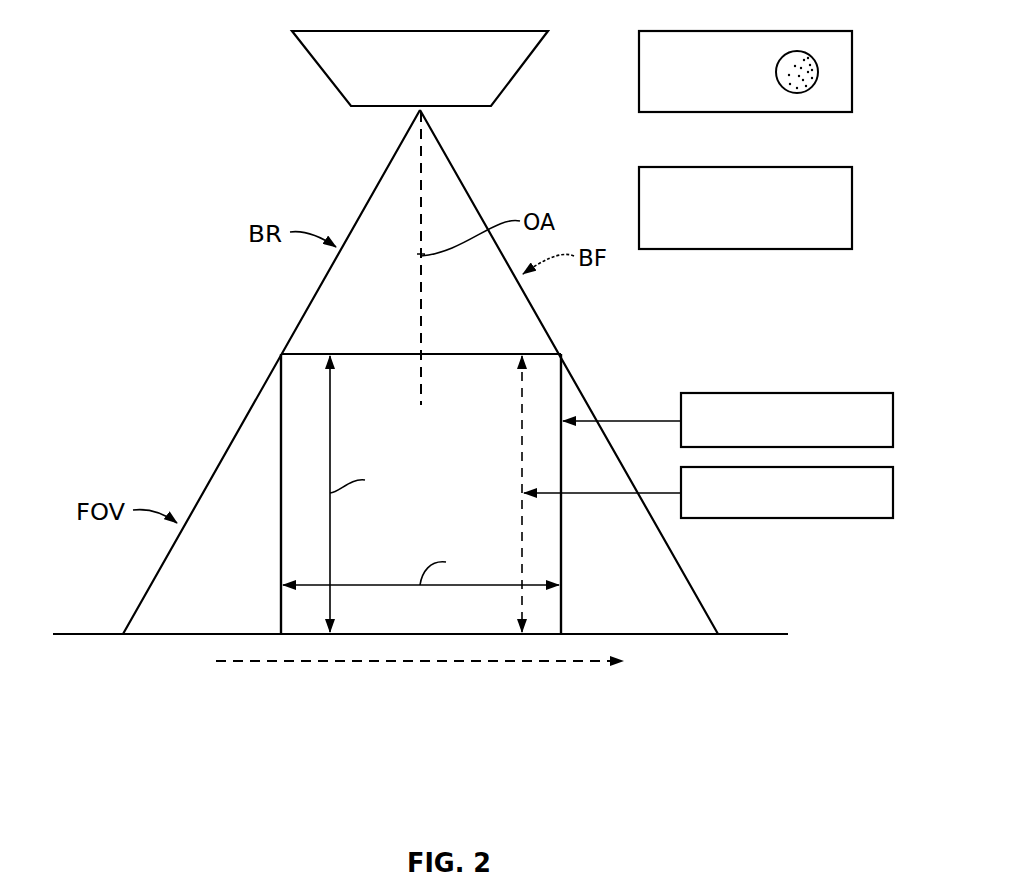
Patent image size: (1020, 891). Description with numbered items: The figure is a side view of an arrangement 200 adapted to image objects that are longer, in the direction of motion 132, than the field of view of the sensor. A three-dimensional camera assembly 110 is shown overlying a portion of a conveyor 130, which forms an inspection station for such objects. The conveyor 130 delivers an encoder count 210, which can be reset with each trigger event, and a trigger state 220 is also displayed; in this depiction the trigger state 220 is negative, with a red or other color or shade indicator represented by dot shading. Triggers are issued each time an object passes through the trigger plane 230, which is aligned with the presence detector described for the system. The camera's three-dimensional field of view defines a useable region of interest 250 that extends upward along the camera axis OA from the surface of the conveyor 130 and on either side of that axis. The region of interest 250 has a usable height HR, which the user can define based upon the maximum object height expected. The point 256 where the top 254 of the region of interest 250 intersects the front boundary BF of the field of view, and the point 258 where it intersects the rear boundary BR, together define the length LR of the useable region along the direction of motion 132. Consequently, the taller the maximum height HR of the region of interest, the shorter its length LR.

The camera assembly 110 is at (475, 37).
The trigger state 220 is at (783, 30).
The encoder count 210 is at (783, 167).
The top of the ROI 254 is at (313, 354).
The intersection point with rear FOV boundary 258 is at (278, 354).
The intersection point with front FOV boundary 256 is at (562, 354).
The useable region of interest 250 is at (524, 343).
The trigger plane 230 is at (526, 533).
The conveyor 130 is at (755, 636).
The direction of motion 132 is at (262, 662).
The arrangement 200 is at (752, 585).